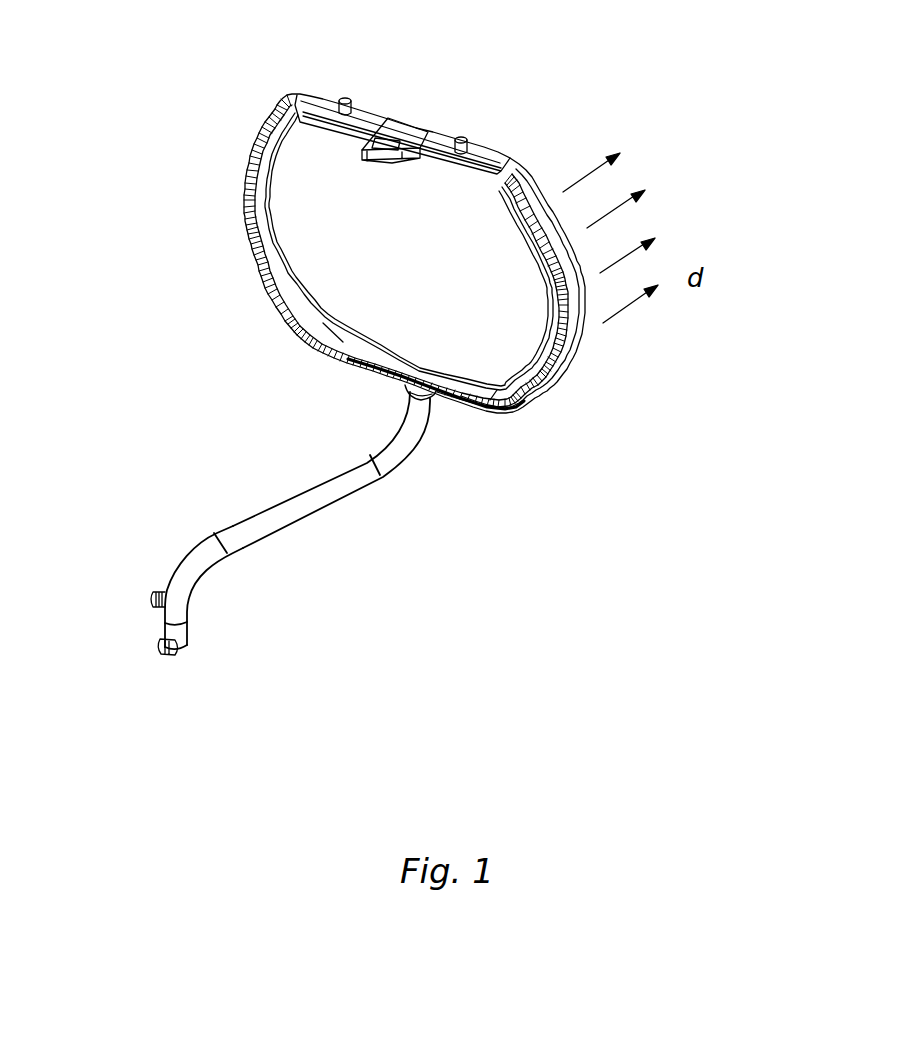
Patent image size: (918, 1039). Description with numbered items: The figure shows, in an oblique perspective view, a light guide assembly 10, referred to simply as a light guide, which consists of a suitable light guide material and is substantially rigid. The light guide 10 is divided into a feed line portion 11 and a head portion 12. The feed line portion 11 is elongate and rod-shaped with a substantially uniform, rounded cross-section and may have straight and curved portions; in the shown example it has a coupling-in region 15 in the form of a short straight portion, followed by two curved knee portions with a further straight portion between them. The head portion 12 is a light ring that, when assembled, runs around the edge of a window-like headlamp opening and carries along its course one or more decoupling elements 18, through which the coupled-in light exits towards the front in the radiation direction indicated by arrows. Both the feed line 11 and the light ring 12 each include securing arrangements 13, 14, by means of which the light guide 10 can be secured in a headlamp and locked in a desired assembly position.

The light guide assembly 10 is at (553, 465).
The feed line portion 11 is at (323, 493).
The head portion 12 is at (573, 362).
The securing arrangement 13 is at (153, 567).
The securing arrangement 14 is at (342, 80).
The coupling-in region 15 is at (130, 585).
The decoupling elements 18 is at (250, 165).